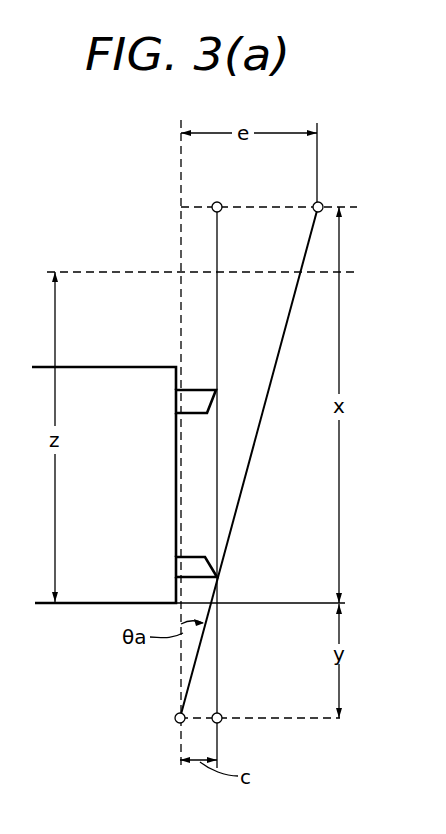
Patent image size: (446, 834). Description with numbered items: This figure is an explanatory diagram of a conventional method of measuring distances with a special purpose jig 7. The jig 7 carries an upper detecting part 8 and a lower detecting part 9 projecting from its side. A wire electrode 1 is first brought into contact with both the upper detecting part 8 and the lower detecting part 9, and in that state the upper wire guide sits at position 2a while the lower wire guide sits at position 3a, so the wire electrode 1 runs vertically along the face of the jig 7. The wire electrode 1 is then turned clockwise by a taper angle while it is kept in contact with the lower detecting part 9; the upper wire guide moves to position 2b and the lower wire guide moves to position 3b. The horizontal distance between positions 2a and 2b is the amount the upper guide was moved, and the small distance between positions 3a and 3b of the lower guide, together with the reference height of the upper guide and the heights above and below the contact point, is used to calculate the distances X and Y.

The wire electrode 1 is at (275, 360).
The position of the upper wire guide 2a is at (215, 201).
The position of the upper wire guide 2b is at (322, 203).
The position of the lower wire guide 3a is at (221, 714).
The position of the lower wire guide 3b is at (177, 714).
The jig 7 is at (118, 365).
The upper detecting part 8 is at (200, 388).
The lower detecting part 9 is at (200, 555).